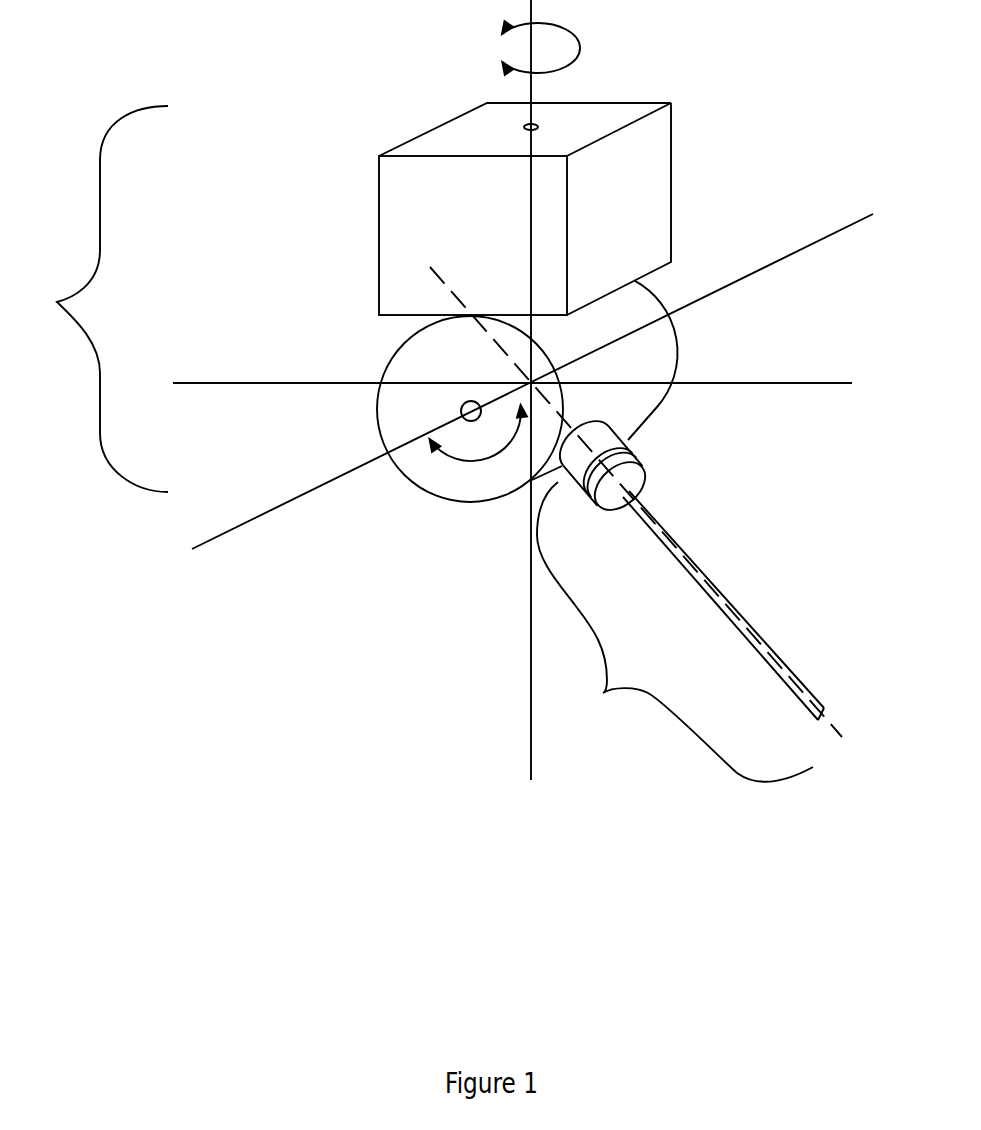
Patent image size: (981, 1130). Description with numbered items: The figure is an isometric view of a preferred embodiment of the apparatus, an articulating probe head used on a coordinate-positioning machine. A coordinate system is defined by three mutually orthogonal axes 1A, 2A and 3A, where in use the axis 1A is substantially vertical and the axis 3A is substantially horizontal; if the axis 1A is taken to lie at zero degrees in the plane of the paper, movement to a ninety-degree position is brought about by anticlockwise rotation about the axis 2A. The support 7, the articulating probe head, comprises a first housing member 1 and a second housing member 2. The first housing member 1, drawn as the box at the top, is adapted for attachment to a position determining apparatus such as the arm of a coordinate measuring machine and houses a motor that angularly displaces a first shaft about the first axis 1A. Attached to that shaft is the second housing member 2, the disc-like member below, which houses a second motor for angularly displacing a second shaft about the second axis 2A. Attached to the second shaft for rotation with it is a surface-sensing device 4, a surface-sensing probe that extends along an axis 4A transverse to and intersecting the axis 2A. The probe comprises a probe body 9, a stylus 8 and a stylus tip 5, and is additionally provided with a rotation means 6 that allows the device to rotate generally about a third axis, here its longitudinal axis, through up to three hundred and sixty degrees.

The first housing member 1 is at (400, 263).
The second housing member 2 is at (433, 349).
The support 7 is at (98, 299).
The probe body 9 is at (608, 433).
The rotation means 6 is at (630, 452).
The stylus 8 is at (710, 555).
The stylus tip 5 is at (827, 703).
The surface-sensing device 4 is at (675, 632).
The first axis 1A is at (541, 410).
The second axis 2A is at (512, 393).
The third axis of coordinate system 3A is at (533, 384).
The probe axis 4A is at (650, 514).